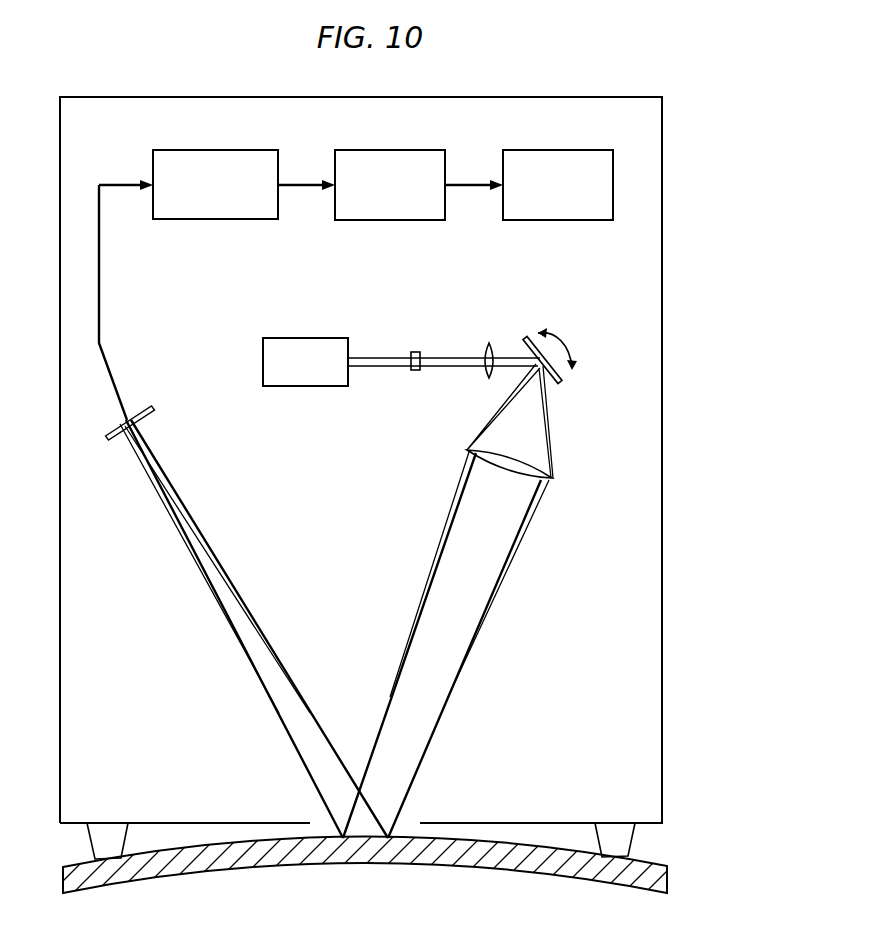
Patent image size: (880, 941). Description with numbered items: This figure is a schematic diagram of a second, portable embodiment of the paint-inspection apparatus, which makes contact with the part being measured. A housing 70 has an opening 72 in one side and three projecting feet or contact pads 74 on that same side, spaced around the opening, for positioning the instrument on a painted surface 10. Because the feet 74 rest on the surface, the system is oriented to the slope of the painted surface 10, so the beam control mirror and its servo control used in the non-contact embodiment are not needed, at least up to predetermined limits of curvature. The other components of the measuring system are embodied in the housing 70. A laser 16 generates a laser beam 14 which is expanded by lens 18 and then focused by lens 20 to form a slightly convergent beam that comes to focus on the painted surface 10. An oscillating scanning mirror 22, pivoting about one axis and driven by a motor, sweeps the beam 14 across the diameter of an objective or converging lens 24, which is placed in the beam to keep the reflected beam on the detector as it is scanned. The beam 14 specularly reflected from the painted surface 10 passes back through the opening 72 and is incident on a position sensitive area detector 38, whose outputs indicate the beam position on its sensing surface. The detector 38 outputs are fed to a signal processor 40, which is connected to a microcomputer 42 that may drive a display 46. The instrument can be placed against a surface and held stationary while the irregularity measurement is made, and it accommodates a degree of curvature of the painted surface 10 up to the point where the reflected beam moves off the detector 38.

The painted surface 10 is at (656, 862).
The laser beam 14 is at (506, 596).
The laser 16 is at (308, 338).
The lens 18 is at (413, 351).
The lens 20 is at (483, 354).
The scanning mirror 22 is at (528, 336).
The objective or converging lens 24 is at (513, 472).
The area detector 38 is at (124, 437).
The signal processor 40 is at (248, 150).
The microcomputer 42 is at (413, 150).
The display 46 is at (580, 150).
The housing 70 is at (663, 500).
The opening 72 is at (444, 822).
The feet or contact pads 74 is at (633, 846).